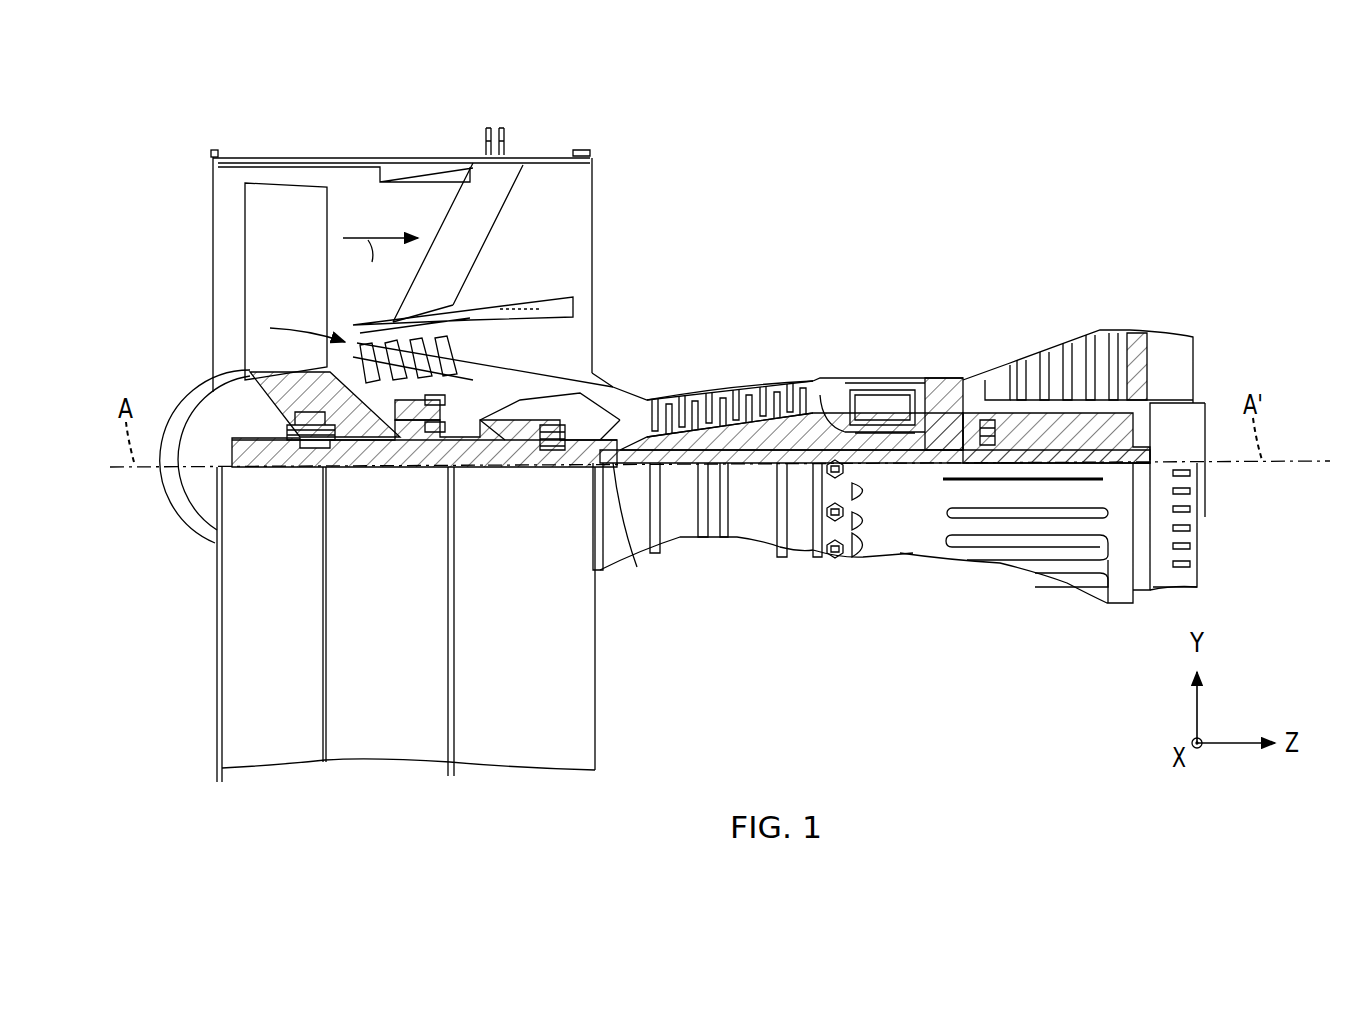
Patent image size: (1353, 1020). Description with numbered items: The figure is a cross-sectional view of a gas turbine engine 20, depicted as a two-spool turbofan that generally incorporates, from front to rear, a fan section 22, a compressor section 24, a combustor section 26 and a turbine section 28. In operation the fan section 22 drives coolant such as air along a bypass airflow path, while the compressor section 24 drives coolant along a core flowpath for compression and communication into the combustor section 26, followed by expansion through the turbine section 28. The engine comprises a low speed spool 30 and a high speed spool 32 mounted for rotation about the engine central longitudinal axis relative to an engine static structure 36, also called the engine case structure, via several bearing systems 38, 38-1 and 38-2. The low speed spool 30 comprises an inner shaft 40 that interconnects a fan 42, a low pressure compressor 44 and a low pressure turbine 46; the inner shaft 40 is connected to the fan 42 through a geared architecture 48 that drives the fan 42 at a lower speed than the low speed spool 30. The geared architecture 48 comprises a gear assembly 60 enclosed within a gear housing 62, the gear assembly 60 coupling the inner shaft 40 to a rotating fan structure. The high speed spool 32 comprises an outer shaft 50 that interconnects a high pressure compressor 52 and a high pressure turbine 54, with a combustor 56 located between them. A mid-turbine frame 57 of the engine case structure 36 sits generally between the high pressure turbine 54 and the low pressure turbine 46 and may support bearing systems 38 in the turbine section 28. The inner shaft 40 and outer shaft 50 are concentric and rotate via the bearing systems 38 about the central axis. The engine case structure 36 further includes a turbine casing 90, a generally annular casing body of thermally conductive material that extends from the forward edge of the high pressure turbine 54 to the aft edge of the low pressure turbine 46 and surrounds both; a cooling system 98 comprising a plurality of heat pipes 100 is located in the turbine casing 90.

The gas turbine engine 20 is at (925, 185).
The fan section 22 is at (445, 140).
The compressor section 24 is at (453, 263).
The combustor section 26 is at (925, 263).
The turbine section 28 is at (1137, 263).
The low speed spool 30 is at (760, 470).
The high speed spool 32 is at (810, 413).
The engine static structure 36 is at (910, 543).
The bearing system 38 is at (983, 430).
The bearing system 38-1 is at (296, 445).
The bearing system 38-2 is at (549, 448).
The inner shaft 40 is at (637, 545).
The fan 42 is at (293, 285).
The low pressure compressor 44 is at (523, 363).
The low pressure turbine 46 is at (1072, 347).
The geared architecture 48 is at (405, 500).
The outer shaft 50 is at (877, 442).
The high pressure compressor 52 is at (753, 390).
The high pressure turbine 54 is at (927, 380).
The combustor 56 is at (880, 393).
The mid-turbine frame 57 is at (990, 373).
The gear assembly 60 is at (435, 427).
The gear housing 62 is at (435, 403).
The turbine casing 90 is at (1140, 640).
The cooling system 98 is at (1117, 592).
The heat pipes 100 is at (945, 540).